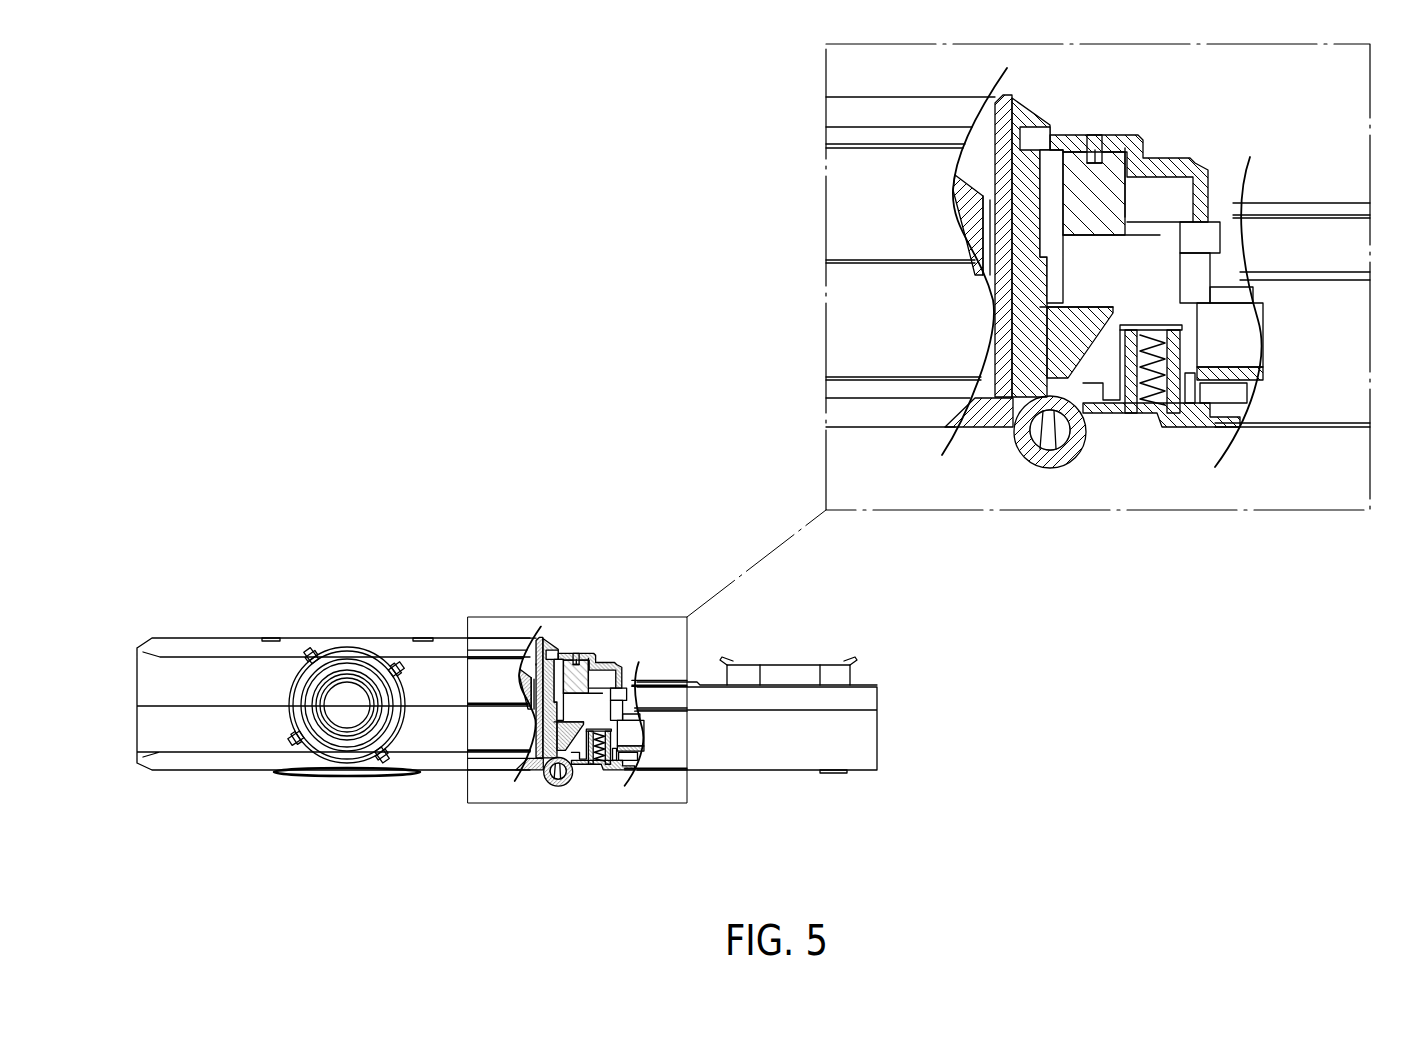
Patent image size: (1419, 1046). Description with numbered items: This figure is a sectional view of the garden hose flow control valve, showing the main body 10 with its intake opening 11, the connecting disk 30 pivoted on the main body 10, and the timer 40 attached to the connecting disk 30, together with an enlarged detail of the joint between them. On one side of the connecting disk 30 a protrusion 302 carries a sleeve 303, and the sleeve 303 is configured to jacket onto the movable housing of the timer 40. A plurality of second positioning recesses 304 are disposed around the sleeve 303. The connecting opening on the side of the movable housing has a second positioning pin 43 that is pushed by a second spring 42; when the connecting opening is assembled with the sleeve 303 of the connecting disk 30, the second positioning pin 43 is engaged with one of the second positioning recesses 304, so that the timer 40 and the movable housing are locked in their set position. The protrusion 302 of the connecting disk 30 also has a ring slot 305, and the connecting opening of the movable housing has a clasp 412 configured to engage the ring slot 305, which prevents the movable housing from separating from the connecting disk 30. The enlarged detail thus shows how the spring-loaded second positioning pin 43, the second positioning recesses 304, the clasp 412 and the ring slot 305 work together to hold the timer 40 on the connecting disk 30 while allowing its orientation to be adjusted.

The main body 10 is at (138, 641).
The intake opening 11 is at (345, 718).
The connecting disk 30 is at (565, 647).
The timer 40 is at (880, 738).
The protrusion 302 is at (1097, 143).
The sleeve 303 is at (1158, 221).
The second positioning pin 43 is at (1265, 301).
The second positioning recesses 304 is at (1200, 318).
The ring slot 305 is at (998, 443).
The clasp 412 is at (1035, 459).
The second spring 42 is at (1215, 433).